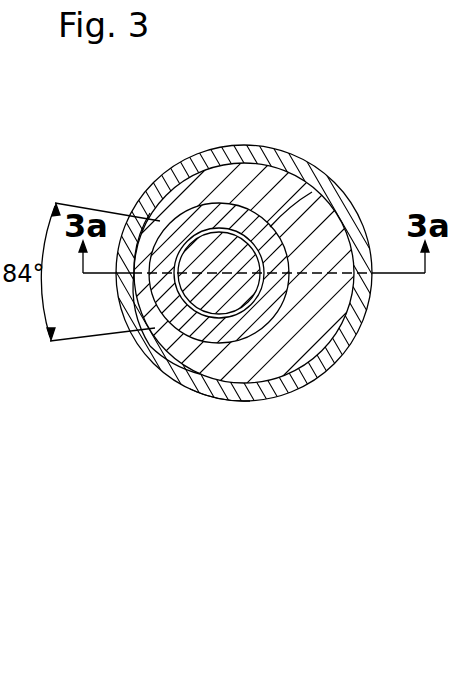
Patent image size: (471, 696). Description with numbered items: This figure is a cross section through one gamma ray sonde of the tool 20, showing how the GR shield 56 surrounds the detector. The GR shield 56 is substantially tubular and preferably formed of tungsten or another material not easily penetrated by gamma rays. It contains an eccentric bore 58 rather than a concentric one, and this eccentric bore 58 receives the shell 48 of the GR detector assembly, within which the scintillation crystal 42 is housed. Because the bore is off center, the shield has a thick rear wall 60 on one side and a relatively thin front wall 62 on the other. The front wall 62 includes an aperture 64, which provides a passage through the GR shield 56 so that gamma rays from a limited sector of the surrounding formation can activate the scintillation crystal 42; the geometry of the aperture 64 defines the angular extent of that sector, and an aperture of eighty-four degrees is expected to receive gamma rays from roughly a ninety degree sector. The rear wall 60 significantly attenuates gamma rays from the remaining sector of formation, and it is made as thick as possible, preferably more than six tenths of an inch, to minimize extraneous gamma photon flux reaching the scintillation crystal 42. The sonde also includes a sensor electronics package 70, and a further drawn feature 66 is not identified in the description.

The tool 20 is at (211, 112).
The scintillation crystal 42 is at (323, 380).
The shell 48 is at (306, 200).
The GR shield 56 is at (269, 187).
The eccentric bore 58 is at (219, 398).
The rear wall 60 is at (362, 327).
The front wall 62 is at (176, 377).
The aperture 64 is at (136, 339).
The curved boundary 66 is at (308, 218).
The sensor electronics package 70 is at (155, 213).